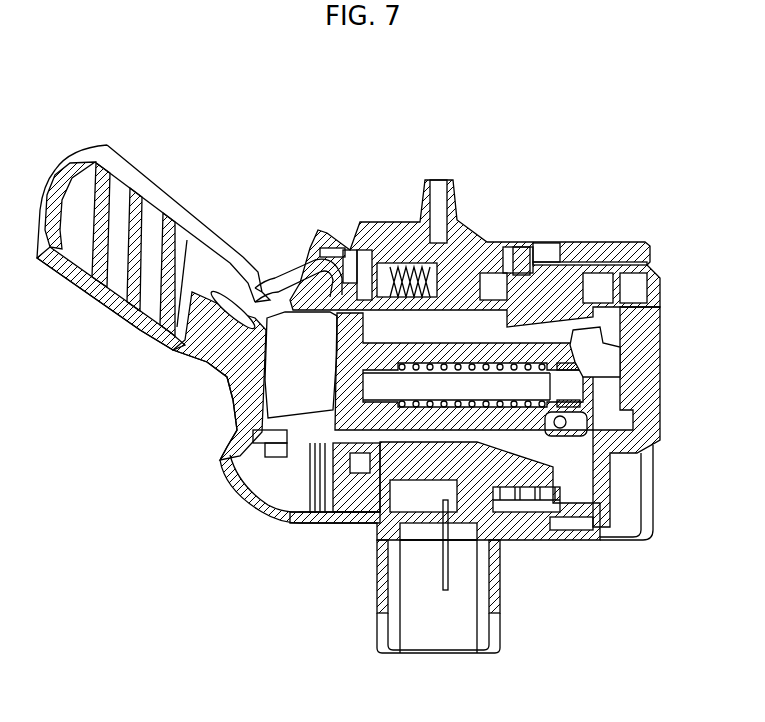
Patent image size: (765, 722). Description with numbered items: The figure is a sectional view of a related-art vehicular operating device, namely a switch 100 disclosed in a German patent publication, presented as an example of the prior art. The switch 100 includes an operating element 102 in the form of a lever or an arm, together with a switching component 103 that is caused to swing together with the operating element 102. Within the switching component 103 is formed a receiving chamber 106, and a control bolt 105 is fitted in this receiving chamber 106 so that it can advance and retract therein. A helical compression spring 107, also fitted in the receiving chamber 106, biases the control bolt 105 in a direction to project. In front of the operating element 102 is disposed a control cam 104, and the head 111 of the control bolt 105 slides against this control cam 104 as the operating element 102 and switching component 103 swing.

The switch 100 is at (277, 157).
The operating element 102 is at (140, 345).
The switching component 103 is at (442, 343).
The control cam 104 is at (620, 357).
The control bolt 105 is at (523, 390).
The receiving chamber 106 is at (407, 405).
The helical compression spring 107 is at (427, 365).
The head 111 is at (606, 384).